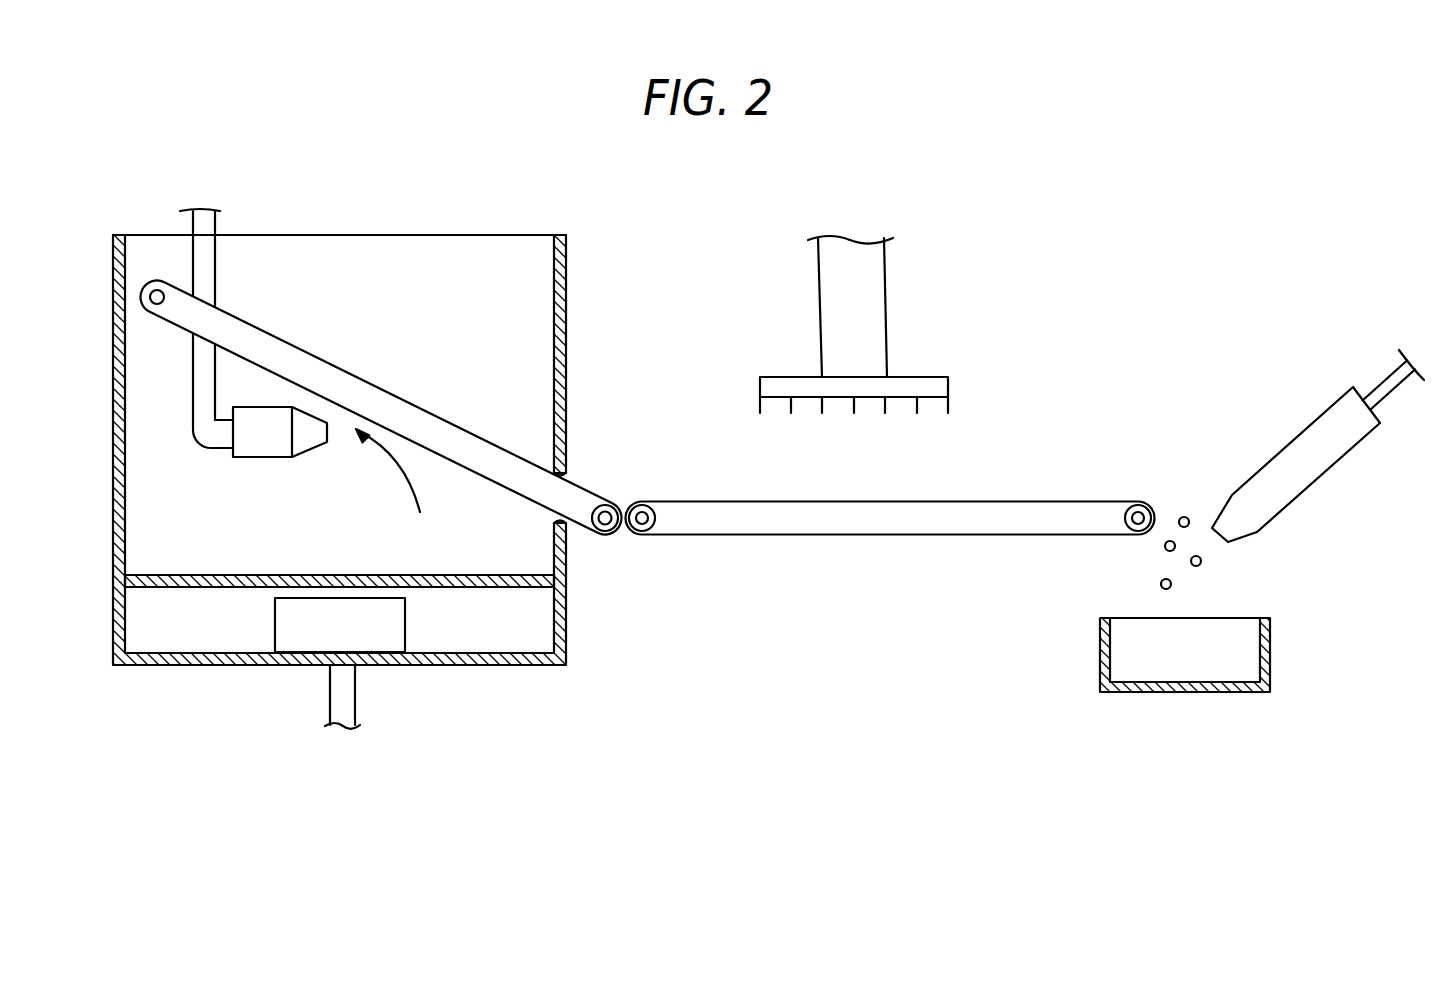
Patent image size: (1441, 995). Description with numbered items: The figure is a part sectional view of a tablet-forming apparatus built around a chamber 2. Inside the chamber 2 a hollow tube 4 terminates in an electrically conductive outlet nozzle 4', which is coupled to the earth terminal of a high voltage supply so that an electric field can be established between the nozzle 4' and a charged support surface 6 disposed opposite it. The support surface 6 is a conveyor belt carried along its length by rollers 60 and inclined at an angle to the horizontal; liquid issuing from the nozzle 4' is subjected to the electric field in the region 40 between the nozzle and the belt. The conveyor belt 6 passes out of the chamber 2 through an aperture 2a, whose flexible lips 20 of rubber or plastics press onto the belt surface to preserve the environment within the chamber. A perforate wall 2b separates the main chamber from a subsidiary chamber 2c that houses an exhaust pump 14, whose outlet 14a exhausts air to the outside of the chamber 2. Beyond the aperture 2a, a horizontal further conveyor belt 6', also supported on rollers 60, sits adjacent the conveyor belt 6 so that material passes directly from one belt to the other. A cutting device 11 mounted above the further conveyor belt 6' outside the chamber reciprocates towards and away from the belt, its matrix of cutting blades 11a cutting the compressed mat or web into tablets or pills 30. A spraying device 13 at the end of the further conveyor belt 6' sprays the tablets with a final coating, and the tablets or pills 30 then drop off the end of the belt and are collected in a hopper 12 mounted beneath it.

The chamber 2 is at (568, 258).
The aperture 2a is at (546, 466).
The perforate wall 2b is at (160, 587).
The subsidiary chamber 2c is at (542, 643).
The hollow tube 4 is at (236, 378).
The outlet nozzle 4' is at (327, 472).
The region 40 is at (400, 491).
The support surface 6 is at (380, 407).
The further conveyor belt 6' is at (890, 563).
The flexible lips 20 is at (574, 474).
The rollers 60 is at (645, 503).
The cutting device 11 is at (908, 297).
The cutting blades 11a is at (952, 400).
The hopper 12 is at (1192, 700).
The spraying device 13 is at (1287, 462).
The tablets or pills 30 is at (1201, 561).
The exhaust pump 14 is at (405, 627).
The outlet 14a is at (331, 706).